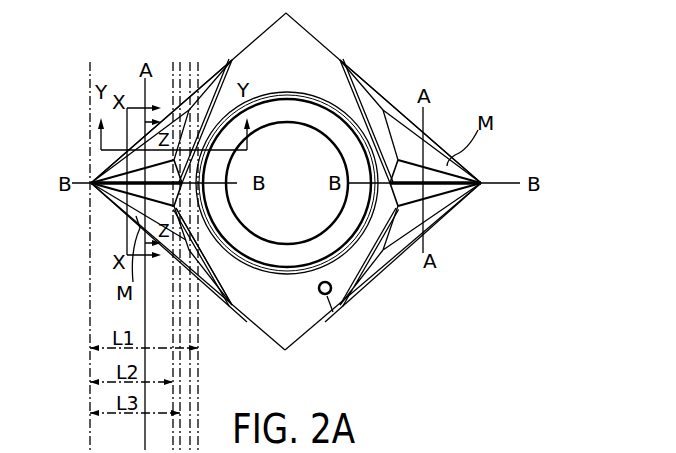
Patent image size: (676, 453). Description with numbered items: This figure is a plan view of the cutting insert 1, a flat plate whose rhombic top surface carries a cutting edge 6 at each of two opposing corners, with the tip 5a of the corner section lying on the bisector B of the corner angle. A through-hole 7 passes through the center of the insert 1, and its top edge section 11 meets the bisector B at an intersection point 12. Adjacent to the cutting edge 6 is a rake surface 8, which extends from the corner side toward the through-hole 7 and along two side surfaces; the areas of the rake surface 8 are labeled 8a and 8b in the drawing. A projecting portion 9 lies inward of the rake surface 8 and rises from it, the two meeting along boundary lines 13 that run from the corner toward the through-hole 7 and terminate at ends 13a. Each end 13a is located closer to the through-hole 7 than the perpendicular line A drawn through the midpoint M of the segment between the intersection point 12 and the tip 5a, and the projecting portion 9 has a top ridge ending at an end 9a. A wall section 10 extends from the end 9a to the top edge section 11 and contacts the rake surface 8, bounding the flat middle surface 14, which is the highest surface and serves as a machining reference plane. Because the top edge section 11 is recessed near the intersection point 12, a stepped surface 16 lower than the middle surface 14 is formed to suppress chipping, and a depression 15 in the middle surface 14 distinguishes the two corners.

The insert 1 is at (408, 58).
The tip of the corner section 5a is at (483, 180).
The cutting edge 6 is at (453, 200).
The through-hole 7 is at (258, 282).
The rake surface 8 is at (456, 56).
The first arm portion 8a is at (413, 140).
The second arm portion 8b is at (433, 145).
The projecting portion 9 is at (440, 240).
The end of the projecting portion 9a is at (384, 108).
The wall section 10 is at (370, 295).
The top edge section 11 is at (285, 302).
The intersection point 12 is at (347, 206).
The boundary line 13 is at (435, 228).
The end of the boundary line 13a is at (405, 216).
The middle surface 14 is at (312, 322).
The depression 15 is at (333, 312).
The stepped surface 16 is at (362, 272).